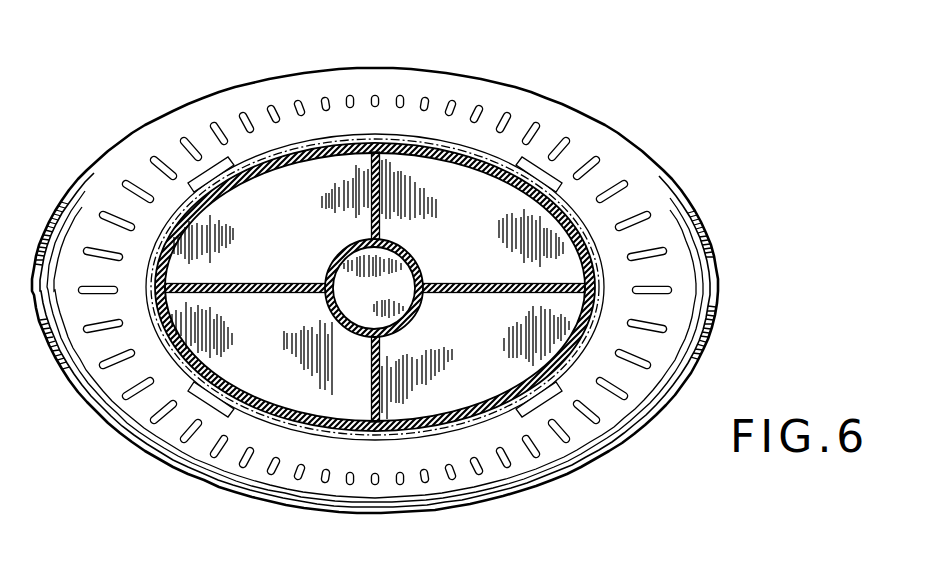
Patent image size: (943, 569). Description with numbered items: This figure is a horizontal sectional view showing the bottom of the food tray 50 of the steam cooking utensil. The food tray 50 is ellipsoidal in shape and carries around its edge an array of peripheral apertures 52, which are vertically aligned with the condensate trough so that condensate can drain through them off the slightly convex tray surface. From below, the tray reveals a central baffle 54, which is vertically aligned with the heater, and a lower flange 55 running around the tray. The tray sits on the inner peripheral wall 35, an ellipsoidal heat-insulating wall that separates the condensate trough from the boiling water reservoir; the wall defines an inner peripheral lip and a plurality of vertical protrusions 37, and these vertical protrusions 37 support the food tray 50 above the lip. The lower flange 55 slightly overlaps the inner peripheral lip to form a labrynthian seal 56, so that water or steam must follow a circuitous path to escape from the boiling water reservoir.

The food tray 50 is at (666, 168).
The peripheral apertures 52 is at (663, 324).
The inner peripheral wall 35 is at (369, 137).
The labrynthian seal 56 is at (465, 150).
The vertical protrusions 37 is at (213, 170).
The central baffle 54 is at (340, 261).
The lower flange 55 is at (568, 358).